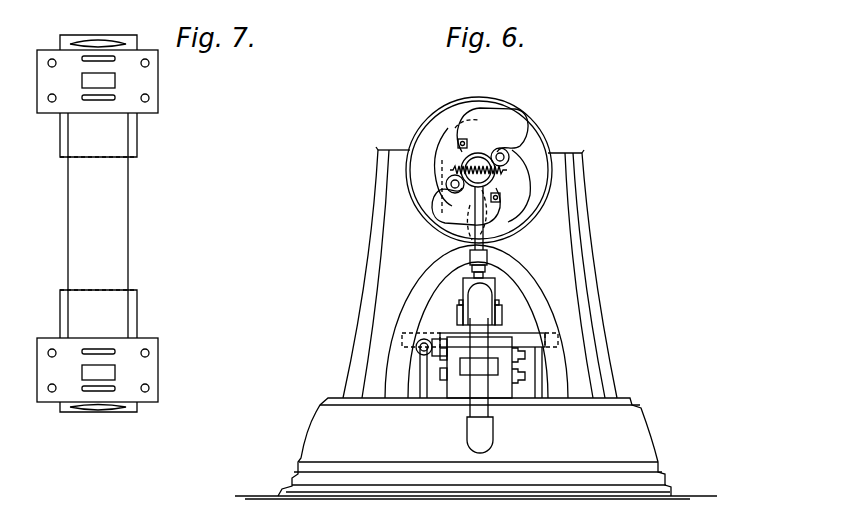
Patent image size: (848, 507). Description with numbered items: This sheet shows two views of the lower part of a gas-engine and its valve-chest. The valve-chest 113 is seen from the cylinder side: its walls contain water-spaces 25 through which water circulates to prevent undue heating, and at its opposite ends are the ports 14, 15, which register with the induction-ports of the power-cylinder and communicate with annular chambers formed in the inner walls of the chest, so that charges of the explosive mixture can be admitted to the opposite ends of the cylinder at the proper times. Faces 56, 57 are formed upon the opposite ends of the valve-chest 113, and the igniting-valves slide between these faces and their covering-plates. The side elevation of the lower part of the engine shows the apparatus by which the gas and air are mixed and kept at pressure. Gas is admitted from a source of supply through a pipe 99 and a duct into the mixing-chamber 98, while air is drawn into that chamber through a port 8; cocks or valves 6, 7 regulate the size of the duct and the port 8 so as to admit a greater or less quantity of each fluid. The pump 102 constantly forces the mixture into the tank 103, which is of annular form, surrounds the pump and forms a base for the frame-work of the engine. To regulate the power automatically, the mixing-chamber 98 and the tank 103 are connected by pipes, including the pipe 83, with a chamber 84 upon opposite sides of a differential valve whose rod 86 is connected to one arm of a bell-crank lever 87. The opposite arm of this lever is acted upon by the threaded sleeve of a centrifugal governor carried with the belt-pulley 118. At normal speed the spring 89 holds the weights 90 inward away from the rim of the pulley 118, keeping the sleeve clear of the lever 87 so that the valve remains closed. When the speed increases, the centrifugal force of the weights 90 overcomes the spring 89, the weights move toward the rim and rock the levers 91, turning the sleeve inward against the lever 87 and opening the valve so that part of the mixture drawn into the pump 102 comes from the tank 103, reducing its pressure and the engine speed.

In FIG. 6, the cock or valve 6 is at (518, 348).
In FIG. 6, the cock or valve 7 is at (519, 383).
In FIG. 6, the port 8 is at (466, 372).
In FIG. 7, the port 14 is at (98, 80).
In FIG. 7, the port 15 is at (98, 372).
In FIG. 7, the water-spaces 25 is at (81, 60).
In FIG. 7, the face 56 is at (137, 141).
In FIG. 7, the face 57 is at (137, 316).
In FIG. 6, the pipe 83 is at (480, 365).
In FIG. 6, the chamber 84 is at (495, 289).
In FIG. 6, the rod 86 is at (470, 258).
In FIG. 6, the bell-crank lever 87 is at (470, 230).
In FIG. 6, the spring 89 is at (450, 170).
In FIG. 6, the weights 90 is at (481, 174).
In FIG. 6, the levers 91 is at (459, 139).
In FIG. 6, the mixing-chamber 98 is at (504, 393).
In FIG. 6, the pipe 99 is at (424, 339).
In FIG. 6, the pump 102 is at (468, 367).
In FIG. 6, the tank 103 is at (476, 448).
In FIG. 7, the valve-chest 113 is at (98, 225).
In FIG. 6, the belt-pulley 118 is at (553, 148).